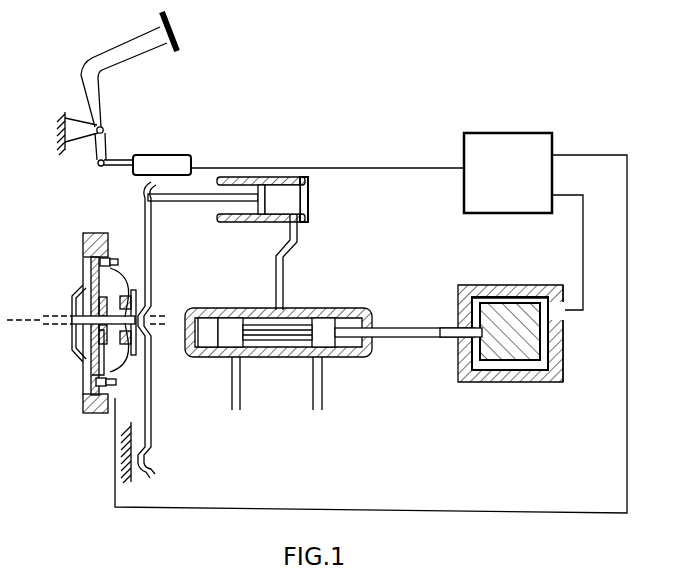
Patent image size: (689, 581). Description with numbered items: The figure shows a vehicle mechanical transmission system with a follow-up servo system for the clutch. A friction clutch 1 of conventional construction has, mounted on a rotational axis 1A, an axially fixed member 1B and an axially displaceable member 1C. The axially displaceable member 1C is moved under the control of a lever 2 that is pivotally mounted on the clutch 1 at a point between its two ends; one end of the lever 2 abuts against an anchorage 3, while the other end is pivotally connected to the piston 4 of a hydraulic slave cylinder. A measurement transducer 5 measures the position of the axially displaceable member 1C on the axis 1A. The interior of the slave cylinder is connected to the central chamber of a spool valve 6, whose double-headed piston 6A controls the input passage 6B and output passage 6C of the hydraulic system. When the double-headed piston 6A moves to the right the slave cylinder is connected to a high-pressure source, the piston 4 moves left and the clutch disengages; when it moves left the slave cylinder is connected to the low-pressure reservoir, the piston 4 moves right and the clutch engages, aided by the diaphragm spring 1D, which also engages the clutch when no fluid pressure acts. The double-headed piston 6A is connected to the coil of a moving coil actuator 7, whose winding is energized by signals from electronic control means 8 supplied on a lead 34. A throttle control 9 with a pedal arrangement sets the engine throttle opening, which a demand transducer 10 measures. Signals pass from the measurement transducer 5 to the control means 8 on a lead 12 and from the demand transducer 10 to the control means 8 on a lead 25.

The friction clutch 1 is at (64, 298).
The rotational axis 1A is at (27, 323).
The axially fixed member 1B is at (96, 414).
The axially displaceable member 1C is at (90, 356).
The diaphragm spring 1D is at (112, 286).
The lever 2 is at (153, 390).
The anchorage 3 is at (131, 426).
The piston 4 is at (206, 200).
The measurement transducer 5 is at (116, 379).
The spool valve 6 is at (323, 302).
The double-headed piston 6A is at (280, 341).
The input passage 6B is at (317, 393).
The output passage 6C is at (236, 396).
The moving coil actuator 7 is at (516, 396).
The electronic control means 8 is at (508, 173).
The throttle control 9 is at (80, 51).
The demand transducer 10 is at (170, 160).
The lead 12 is at (473, 515).
The lead 25 is at (373, 167).
The lead 34 is at (583, 248).